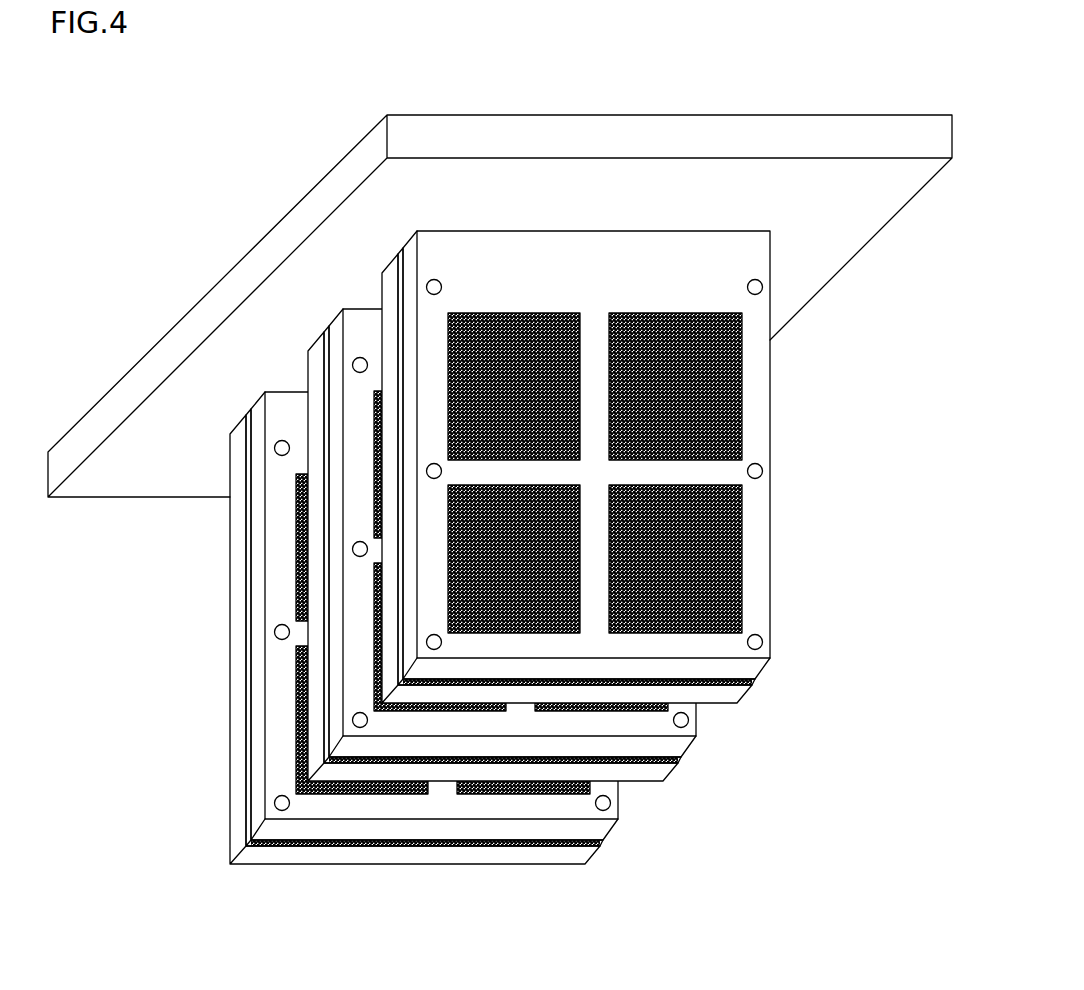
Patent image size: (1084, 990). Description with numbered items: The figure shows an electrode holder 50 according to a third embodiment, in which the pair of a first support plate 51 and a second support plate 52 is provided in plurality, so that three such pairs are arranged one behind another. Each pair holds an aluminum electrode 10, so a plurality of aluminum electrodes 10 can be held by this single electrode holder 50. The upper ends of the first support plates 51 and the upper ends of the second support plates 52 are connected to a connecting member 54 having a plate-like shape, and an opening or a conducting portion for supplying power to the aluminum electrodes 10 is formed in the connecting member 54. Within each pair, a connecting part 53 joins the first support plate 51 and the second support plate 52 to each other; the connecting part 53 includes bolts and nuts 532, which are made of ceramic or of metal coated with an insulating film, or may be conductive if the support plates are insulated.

The aluminum electrode 10 is at (403, 355).
The electrode holder 50 is at (182, 296).
The first support plate 51 is at (493, 245).
The second support plate 52 is at (390, 262).
The connecting part 53 is at (613, 545).
The nut 532 is at (761, 286).
The connecting member 54 is at (783, 127).